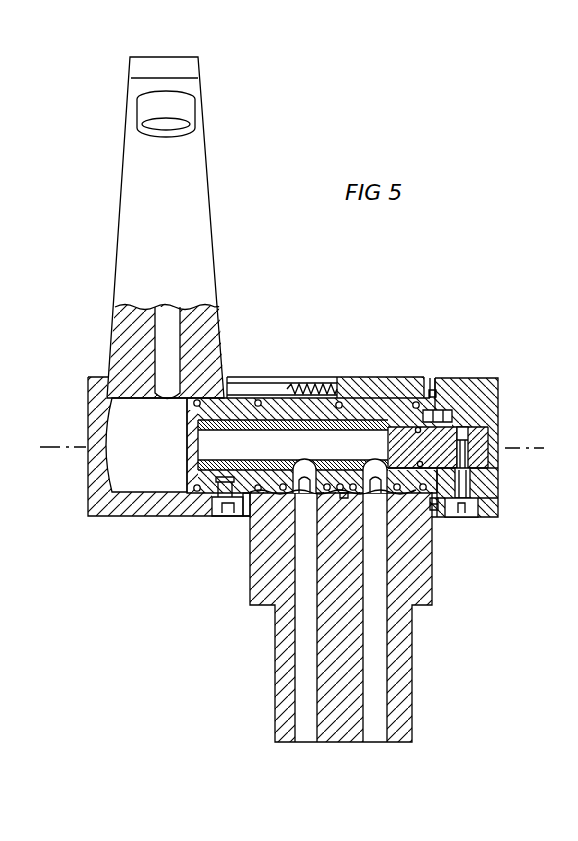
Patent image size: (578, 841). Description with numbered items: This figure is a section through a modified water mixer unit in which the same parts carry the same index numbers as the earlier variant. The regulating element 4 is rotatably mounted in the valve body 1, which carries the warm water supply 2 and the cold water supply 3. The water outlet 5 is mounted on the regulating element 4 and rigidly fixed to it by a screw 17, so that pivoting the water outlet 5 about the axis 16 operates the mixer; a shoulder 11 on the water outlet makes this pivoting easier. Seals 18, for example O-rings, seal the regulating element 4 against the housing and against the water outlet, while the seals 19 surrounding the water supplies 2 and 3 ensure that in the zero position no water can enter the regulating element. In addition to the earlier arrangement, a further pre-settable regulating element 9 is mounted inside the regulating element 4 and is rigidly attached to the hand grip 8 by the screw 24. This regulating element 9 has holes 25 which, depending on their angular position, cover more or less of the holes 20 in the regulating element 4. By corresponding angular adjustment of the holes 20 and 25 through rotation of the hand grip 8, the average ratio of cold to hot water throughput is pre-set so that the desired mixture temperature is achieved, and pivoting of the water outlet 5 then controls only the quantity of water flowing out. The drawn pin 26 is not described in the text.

The valve body 1 is at (420, 540).
The warm water supply 2 is at (308, 738).
The cold water supply 3 is at (378, 738).
The regulating element 4 is at (373, 410).
The water outlet 5 is at (200, 68).
The hand grip 8 is at (497, 435).
The pre-settable regulating element 9 is at (180, 493).
The shoulder 11 is at (166, 114).
The axis 16 is at (50, 449).
The screw 17 is at (223, 516).
The seals 18 is at (200, 399).
The seals 19 is at (250, 522).
The holes 20 is at (302, 480).
The screw 24 is at (467, 518).
The holes 25 is at (300, 452).
The pin 26 is at (463, 427).